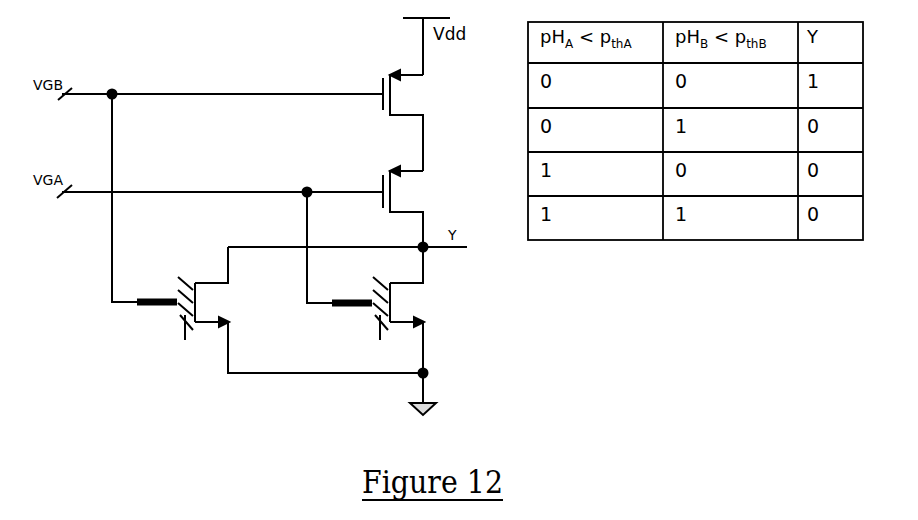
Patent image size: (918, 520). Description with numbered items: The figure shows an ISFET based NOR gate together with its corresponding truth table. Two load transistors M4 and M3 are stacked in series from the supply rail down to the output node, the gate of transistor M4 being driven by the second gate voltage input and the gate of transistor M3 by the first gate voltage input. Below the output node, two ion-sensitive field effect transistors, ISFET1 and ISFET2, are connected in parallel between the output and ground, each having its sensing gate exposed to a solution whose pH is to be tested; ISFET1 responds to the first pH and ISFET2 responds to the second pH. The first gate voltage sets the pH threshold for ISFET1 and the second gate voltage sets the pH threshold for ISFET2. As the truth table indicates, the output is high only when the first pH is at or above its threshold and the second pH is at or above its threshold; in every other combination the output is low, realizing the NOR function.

The transistor M4 is at (378, 120).
The transistor M3 is at (378, 206).
The ISFET ISFET2 is at (267, 233).
The ISFET ISFET1 is at (391, 303).